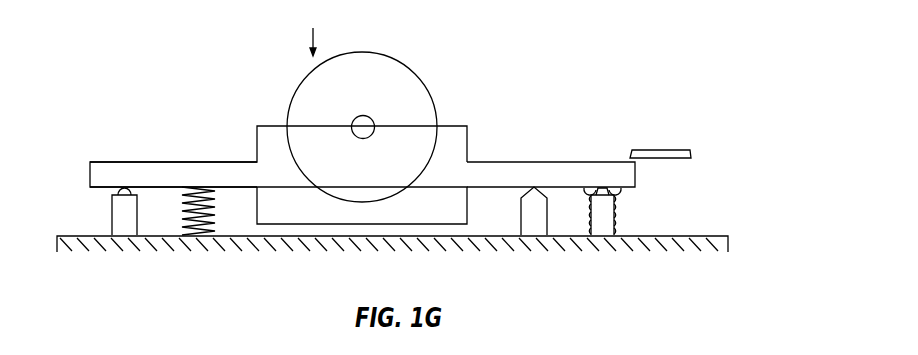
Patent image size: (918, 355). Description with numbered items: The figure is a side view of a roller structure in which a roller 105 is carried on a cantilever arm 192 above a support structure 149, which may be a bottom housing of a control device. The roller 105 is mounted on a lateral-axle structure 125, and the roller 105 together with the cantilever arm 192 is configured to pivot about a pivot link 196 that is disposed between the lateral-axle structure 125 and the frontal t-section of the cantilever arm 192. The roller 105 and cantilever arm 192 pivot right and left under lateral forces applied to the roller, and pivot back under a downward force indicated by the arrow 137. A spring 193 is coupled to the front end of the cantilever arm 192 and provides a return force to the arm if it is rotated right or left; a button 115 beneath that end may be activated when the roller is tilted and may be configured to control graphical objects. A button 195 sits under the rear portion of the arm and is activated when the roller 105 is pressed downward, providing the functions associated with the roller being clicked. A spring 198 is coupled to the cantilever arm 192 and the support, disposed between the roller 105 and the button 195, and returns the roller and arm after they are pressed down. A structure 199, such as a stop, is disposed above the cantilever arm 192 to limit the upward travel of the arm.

The roller 105 is at (438, 118).
The button 115 is at (603, 237).
The lateral-axle structure 125 is at (363, 116).
The arrow 137 is at (310, 42).
The support structure 149 is at (707, 234).
The cantilever arm 192 is at (551, 162).
The spring 193 is at (618, 218).
The button 195 is at (112, 217).
The pivot link 196 is at (535, 237).
The spring 198 is at (200, 187).
The structure 199 is at (660, 150).